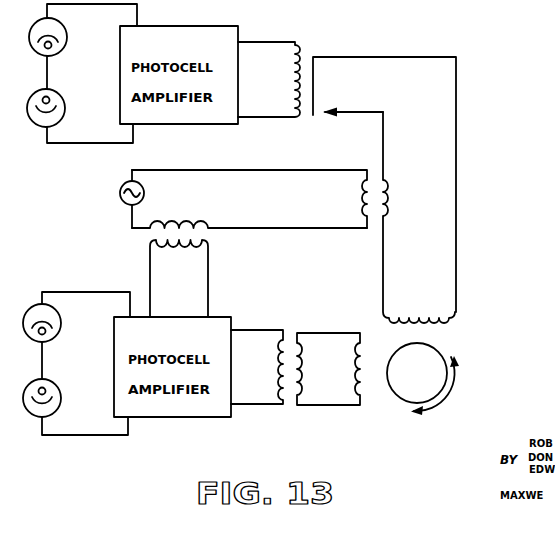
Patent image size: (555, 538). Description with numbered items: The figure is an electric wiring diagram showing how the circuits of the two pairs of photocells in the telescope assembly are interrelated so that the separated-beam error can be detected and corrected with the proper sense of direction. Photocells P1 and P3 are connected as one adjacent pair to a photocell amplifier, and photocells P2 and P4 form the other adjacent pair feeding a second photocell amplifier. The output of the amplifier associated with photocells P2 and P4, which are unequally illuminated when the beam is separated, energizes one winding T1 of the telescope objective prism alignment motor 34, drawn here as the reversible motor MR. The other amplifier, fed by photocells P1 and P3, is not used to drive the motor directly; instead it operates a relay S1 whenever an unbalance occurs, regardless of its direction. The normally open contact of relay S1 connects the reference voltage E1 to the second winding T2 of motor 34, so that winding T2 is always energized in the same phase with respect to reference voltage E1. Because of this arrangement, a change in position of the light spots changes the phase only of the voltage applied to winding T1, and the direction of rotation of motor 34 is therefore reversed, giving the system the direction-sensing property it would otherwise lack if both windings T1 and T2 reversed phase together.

The photocell P1 is at (56, 37).
The photocell P2 is at (51, 323).
The photocell P3 is at (55, 108).
The photocell P4 is at (51, 398).
The relay S1 is at (347, 169).
The reference voltage E1 is at (117, 199).
The winding T1 is at (301, 384).
The winding T2 is at (306, 221).
The reversible motor MR is at (423, 379).
The telescope objective prism alignment motor 34 is at (437, 357).